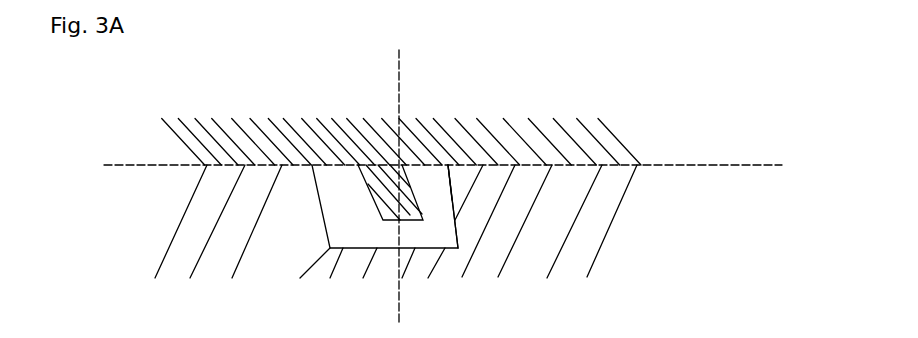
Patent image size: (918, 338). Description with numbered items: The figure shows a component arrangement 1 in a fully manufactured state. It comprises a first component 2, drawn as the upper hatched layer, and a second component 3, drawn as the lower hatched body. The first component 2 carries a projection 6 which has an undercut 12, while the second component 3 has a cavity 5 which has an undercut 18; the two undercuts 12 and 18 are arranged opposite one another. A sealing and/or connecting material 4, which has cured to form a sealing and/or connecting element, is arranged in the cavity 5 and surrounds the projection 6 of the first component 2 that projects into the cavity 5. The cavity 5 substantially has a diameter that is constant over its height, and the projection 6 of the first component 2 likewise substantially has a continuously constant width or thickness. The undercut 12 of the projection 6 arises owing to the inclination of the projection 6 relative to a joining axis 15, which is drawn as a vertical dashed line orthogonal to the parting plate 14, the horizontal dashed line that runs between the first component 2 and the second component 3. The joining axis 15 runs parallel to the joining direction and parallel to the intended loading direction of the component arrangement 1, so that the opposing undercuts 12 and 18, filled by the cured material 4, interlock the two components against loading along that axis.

The component arrangement 1 is at (111, 112).
The first component 2 is at (565, 140).
The second component 3 is at (560, 225).
The sealing and/or connecting material 4 is at (360, 232).
The cavity 5 is at (441, 238).
The projection 6 is at (394, 198).
The undercut 12 is at (408, 186).
The parting plate 14 is at (707, 165).
The joining axis 15 is at (398, 72).
The undercut 18 is at (452, 185).